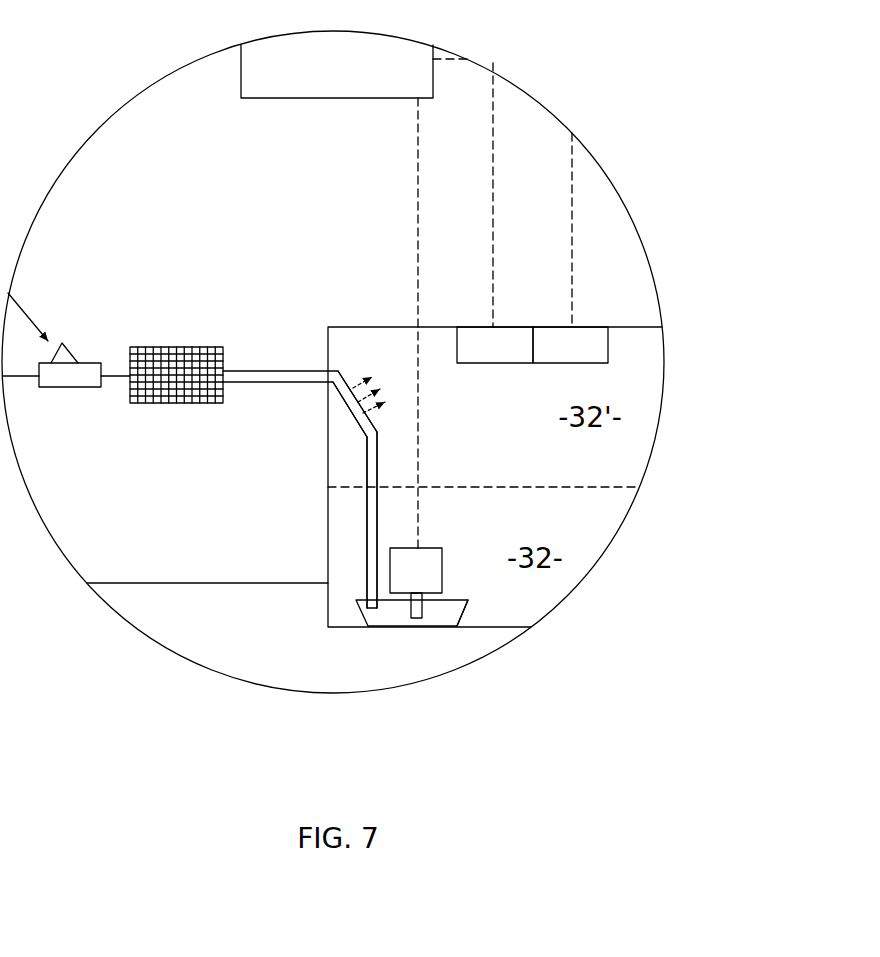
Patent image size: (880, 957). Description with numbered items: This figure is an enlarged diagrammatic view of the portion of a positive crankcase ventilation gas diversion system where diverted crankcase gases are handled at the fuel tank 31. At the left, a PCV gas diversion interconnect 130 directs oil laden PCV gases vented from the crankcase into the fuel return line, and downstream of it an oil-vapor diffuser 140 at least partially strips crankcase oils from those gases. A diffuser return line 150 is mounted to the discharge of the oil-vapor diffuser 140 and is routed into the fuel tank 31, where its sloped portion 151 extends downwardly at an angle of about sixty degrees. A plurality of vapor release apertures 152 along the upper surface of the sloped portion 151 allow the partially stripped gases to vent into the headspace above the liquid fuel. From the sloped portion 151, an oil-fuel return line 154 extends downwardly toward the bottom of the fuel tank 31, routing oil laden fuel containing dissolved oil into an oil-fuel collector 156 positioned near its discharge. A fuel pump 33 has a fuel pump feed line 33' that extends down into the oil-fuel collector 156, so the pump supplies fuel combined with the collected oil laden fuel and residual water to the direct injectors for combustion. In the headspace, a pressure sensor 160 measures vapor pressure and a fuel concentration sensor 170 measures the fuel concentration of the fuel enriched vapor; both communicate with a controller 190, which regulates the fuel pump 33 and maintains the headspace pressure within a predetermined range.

The controller 190 is at (337, 71).
The fuel tank 31 is at (325, 612).
The PCV gas diversion interconnect 130 is at (86, 363).
The oil-vapor diffuser 140 is at (172, 347).
The diffuser return line 150 is at (285, 371).
The sloped portion 151 is at (340, 393).
The vapor release apertures 152 is at (350, 395).
The oil-fuel return line 154 is at (378, 520).
The fuel concentration sensor 170 is at (478, 355).
The pressure sensor 160 is at (595, 347).
The fuel pump 33 is at (482, 561).
The fuel pump feed line 33' is at (428, 675).
The oil-fuel collector 156 is at (468, 603).